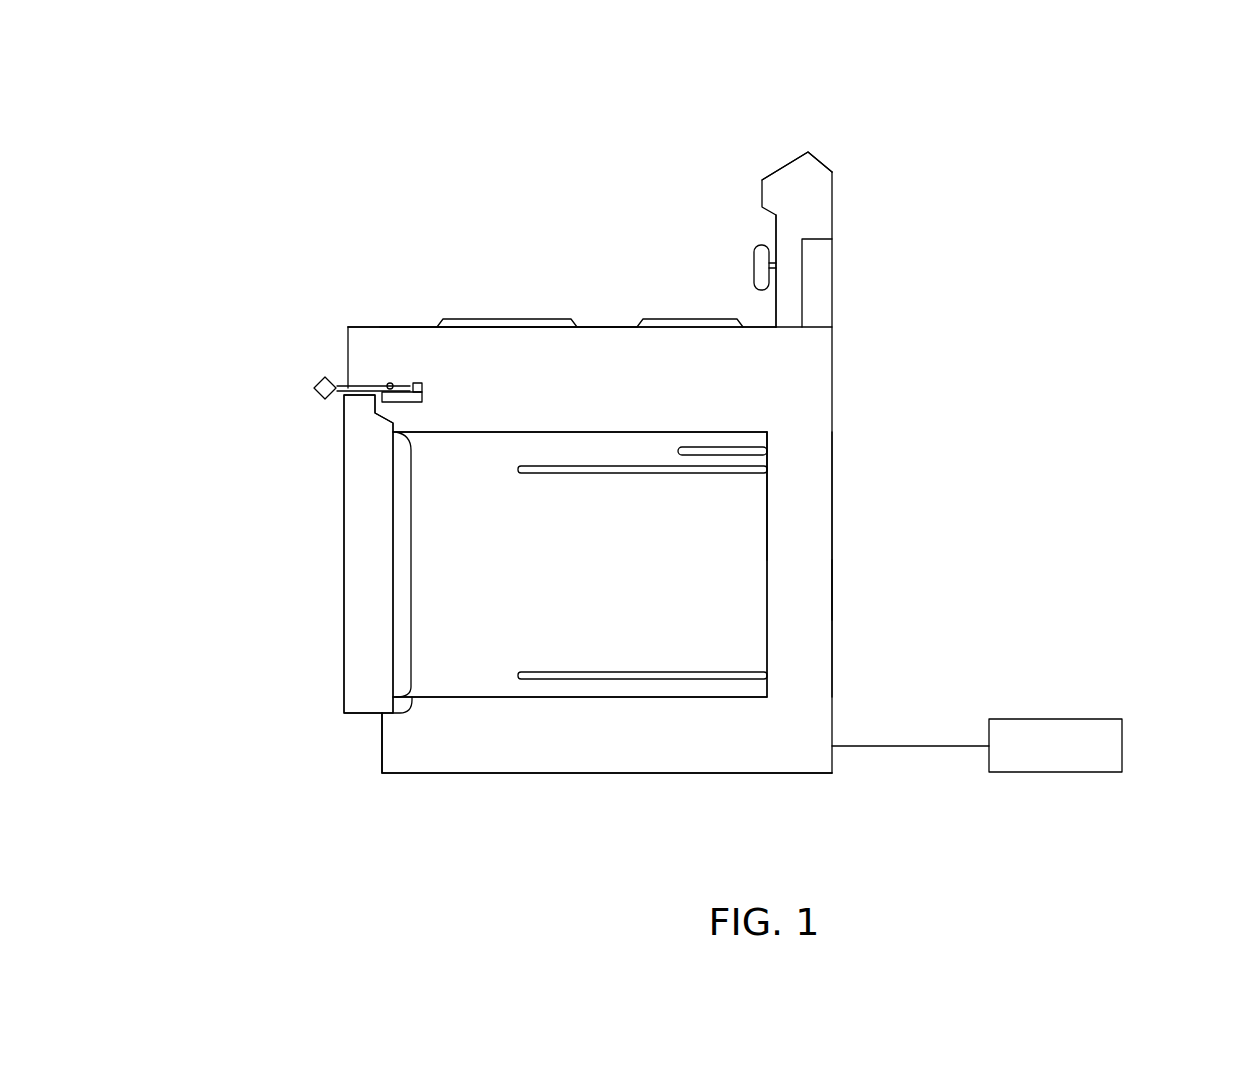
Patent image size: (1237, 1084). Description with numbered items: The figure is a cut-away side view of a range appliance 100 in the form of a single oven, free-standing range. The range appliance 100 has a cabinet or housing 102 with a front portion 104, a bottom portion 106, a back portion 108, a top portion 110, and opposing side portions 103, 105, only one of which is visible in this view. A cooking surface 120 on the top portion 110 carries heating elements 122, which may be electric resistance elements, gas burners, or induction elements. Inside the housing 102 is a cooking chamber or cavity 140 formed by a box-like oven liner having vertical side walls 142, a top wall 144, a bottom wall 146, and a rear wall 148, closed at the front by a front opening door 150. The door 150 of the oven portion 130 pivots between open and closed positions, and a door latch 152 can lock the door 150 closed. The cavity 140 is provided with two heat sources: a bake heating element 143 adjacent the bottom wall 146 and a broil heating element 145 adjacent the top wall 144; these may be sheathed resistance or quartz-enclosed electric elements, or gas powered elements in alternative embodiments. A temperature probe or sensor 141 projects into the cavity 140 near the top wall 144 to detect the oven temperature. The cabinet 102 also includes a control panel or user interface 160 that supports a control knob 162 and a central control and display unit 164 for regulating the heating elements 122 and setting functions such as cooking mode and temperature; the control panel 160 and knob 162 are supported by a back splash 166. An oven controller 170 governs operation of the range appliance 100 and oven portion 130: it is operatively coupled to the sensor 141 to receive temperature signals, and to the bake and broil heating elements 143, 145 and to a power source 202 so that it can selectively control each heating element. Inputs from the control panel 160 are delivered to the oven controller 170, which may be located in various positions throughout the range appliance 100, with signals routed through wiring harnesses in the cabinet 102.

The range appliance 100 is at (563, 148).
The cabinet or housing 102 is at (832, 352).
The side portion 103 is at (363, 738).
The front portion 104 is at (346, 335).
The side portion 105 is at (836, 583).
The bottom portion 106 is at (780, 773).
The back portion 108 is at (832, 545).
The top portion 110 is at (396, 327).
The cooking surface 120 is at (600, 327).
The heating elements 122 is at (507, 319).
The oven portion 130 is at (313, 628).
The cooking chamber or cavity 140 is at (570, 578).
The temperature probe or sensor 141 is at (767, 452).
The vertical side walls 142 is at (742, 620).
The bake heating element 143 is at (740, 473).
The top wall 144 is at (747, 433).
The broil heating element 145 is at (757, 697).
The bottom wall 146 is at (668, 697).
The rear wall 148 is at (767, 542).
The front opening door 150 is at (343, 590).
The door latch 152 is at (318, 378).
The control panel or user interface 160 is at (775, 222).
The control knob 162 is at (754, 270).
The central control and display unit 164 is at (776, 238).
The back splash 166 is at (818, 160).
The oven controller 170 is at (820, 278).
The power source 202 is at (1122, 742).